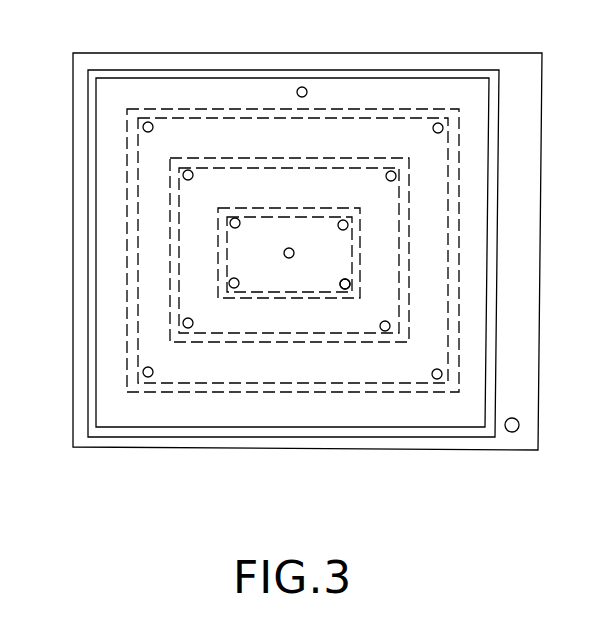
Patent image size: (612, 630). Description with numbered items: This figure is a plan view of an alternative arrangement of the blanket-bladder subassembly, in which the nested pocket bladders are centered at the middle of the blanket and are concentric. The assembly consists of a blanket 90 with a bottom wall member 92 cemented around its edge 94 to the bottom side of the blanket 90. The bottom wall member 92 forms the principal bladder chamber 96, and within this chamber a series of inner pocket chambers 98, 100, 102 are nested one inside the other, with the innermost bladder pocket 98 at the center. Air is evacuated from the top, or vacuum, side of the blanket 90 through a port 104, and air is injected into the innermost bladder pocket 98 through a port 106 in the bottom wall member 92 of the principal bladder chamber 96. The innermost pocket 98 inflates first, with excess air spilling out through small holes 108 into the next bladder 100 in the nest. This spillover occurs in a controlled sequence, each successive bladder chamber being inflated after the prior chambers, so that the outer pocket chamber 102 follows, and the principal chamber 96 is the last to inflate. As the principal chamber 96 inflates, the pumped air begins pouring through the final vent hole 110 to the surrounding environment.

The blanket 90 is at (520, 247).
The bottom wall member 92 is at (507, 162).
The edge 94 is at (487, 320).
The principal bladder chamber 96 is at (298, 263).
The innermost bladder pocket 98 is at (247, 258).
The inner pocket chamber 100 is at (197, 202).
The inner pocket chamber 102 is at (182, 143).
The port 104 is at (523, 427).
The port 106 is at (287, 263).
The small holes 108 is at (333, 283).
The final vent hole 110 is at (303, 82).